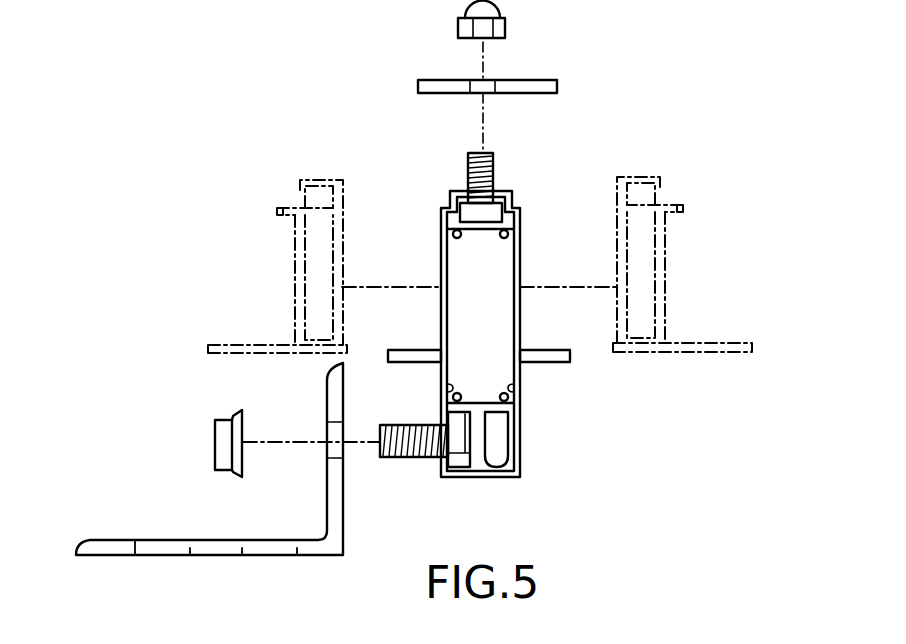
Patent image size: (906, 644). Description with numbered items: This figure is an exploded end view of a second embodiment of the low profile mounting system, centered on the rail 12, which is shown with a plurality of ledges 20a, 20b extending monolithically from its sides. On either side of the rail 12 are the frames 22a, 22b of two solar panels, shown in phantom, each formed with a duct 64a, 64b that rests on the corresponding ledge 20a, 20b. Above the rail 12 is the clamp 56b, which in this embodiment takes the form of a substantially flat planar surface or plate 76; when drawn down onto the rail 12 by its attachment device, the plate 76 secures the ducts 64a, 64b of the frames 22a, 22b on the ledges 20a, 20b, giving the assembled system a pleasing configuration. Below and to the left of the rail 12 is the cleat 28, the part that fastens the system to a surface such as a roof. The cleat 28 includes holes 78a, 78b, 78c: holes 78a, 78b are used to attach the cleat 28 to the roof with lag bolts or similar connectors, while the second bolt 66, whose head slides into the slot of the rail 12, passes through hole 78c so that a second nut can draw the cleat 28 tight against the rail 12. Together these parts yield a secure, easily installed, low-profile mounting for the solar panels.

The rail 12 is at (522, 263).
The ledge 20a is at (555, 363).
The ledge 20b is at (402, 355).
The frame 22a is at (665, 265).
The frame 22b is at (295, 270).
The cleat 28 is at (125, 540).
The clamp 56b is at (543, 80).
The duct 64a is at (660, 190).
The duct 64b is at (300, 193).
The second bolt 66 is at (413, 458).
The plate 76 is at (545, 94).
The hole 78a is at (334, 430).
The hole 78b is at (258, 543).
The hole 78c is at (175, 548).